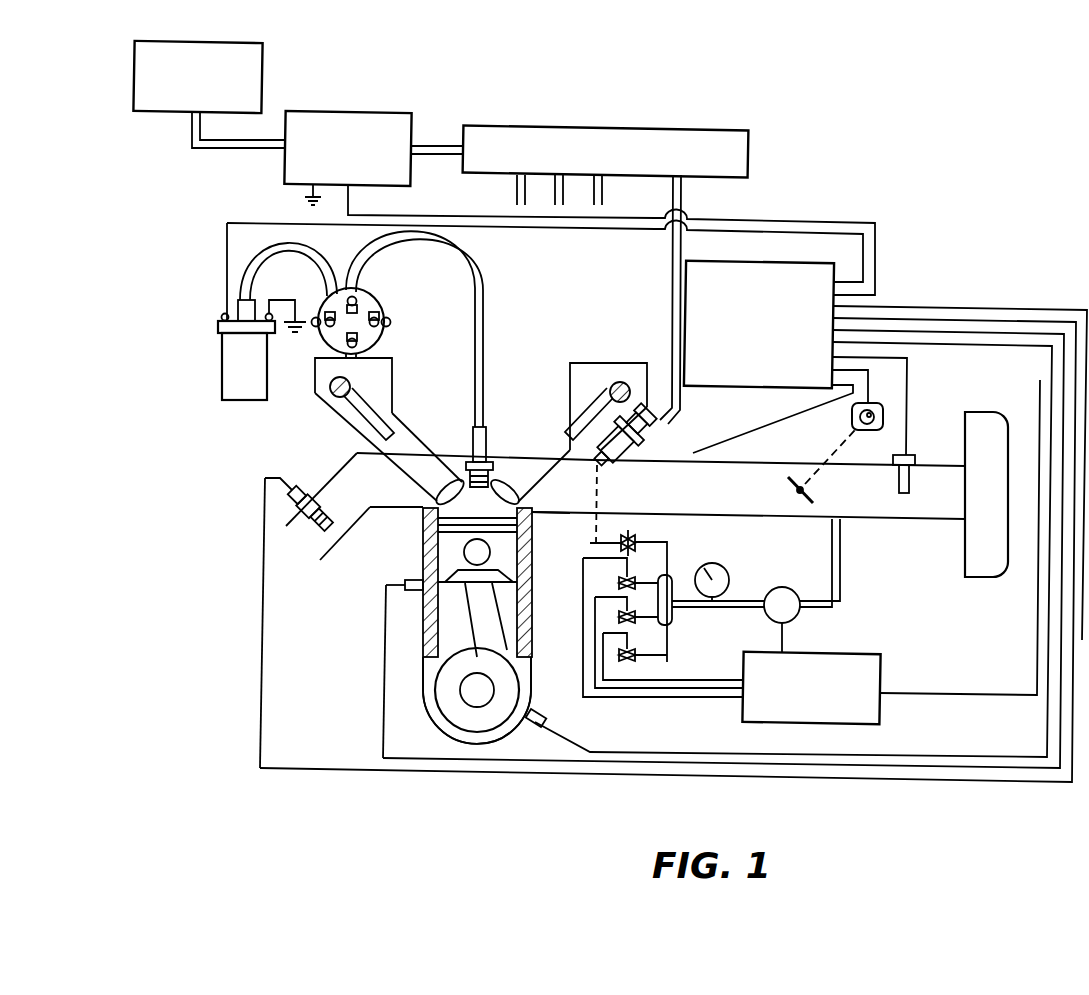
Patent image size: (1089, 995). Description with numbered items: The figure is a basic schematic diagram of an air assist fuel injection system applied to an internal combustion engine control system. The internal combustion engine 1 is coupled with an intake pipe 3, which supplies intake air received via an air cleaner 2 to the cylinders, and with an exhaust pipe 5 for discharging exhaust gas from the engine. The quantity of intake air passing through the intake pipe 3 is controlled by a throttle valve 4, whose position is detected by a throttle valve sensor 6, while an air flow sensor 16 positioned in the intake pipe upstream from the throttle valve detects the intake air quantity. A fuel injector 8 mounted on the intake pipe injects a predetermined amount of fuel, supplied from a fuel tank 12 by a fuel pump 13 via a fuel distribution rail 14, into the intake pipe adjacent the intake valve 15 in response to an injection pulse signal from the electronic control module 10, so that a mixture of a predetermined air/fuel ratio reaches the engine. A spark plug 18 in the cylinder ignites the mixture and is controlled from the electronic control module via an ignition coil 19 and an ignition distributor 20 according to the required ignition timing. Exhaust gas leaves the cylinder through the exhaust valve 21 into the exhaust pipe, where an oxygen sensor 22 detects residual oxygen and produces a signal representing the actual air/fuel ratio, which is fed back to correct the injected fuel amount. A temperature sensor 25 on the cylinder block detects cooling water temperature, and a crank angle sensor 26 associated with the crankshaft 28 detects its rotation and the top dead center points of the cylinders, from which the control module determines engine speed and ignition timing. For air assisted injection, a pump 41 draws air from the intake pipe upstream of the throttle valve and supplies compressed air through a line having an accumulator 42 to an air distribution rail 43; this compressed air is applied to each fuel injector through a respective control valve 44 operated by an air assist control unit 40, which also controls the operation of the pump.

The internal combustion engine 1 is at (428, 718).
The air cleaner 2 is at (985, 578).
The intake pipe 3 is at (905, 519).
The throttle valve 4 is at (792, 497).
The exhaust pipe 5 is at (385, 510).
The throttle valve sensor 6 is at (850, 425).
The fuel injector 8 is at (663, 428).
The electronic control module 10 is at (750, 388).
The fuel tank 12 is at (264, 80).
The fuel pump 13 is at (395, 118).
The fuel distribution rail 14 is at (752, 162).
The intake valve 15 is at (549, 438).
The air flow sensor 16 is at (906, 455).
The spark plug 18 is at (470, 450).
The ignition coil 19 is at (228, 352).
The ignition distributor 20 is at (373, 302).
The exhaust valve 21 is at (410, 434).
The oxygen sensor 22 is at (290, 488).
The temperature sensor 25 is at (410, 580).
The crank angle sensor 26 is at (535, 726).
The crankshaft 28 is at (520, 684).
The air assist control unit 40 is at (882, 700).
The pump 41 is at (800, 620).
The accumulator 42 is at (722, 570).
The air distribution rail 43 is at (672, 615).
The control valve 44 is at (630, 528).